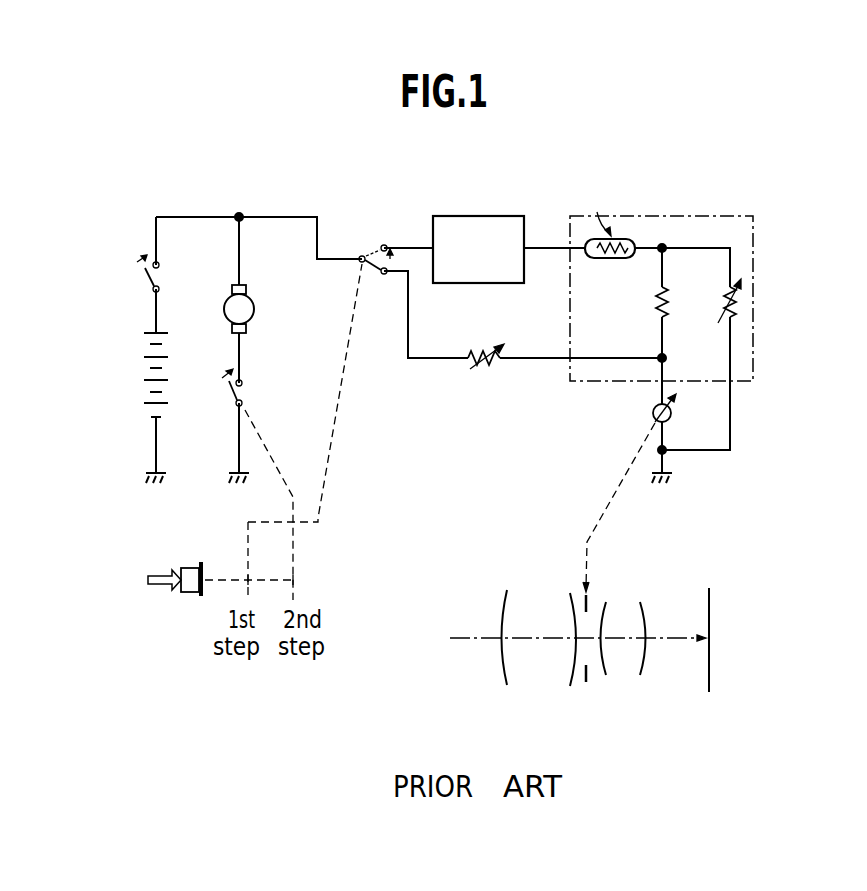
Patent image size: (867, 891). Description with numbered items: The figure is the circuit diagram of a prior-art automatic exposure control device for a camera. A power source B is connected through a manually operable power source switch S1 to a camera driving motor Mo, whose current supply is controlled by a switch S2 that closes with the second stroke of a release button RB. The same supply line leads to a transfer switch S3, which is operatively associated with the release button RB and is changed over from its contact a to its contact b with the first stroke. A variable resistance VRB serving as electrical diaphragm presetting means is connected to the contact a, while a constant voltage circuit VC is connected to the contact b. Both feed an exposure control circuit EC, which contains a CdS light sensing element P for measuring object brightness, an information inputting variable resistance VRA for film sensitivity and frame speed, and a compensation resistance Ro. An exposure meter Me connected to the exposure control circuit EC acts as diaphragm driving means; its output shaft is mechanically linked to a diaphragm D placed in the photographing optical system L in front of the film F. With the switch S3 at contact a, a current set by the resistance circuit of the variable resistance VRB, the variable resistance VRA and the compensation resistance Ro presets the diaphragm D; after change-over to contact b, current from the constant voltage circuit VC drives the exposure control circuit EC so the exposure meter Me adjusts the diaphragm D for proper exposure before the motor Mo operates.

The power source switch S1 is at (150, 276).
The power source B is at (146, 369).
The camera driving motor Mo is at (224, 303).
The motor control switch S2 is at (234, 391).
The transfer switch S3 is at (368, 272).
The contact a is at (384, 283).
The contact b is at (385, 236).
The constant voltage circuit VC is at (462, 216).
The diaphragm presetting variable resistance VRB is at (485, 366).
The exposure control circuit EC is at (660, 216).
The light sensing element P is at (615, 259).
The compensation resistance Ro is at (660, 302).
The information inputting variable resistance VRA is at (725, 301).
The exposure meter Me is at (676, 409).
The release button RB is at (188, 572).
The photographing optical system L is at (620, 677).
The diaphragm D is at (590, 599).
The film F is at (712, 598).